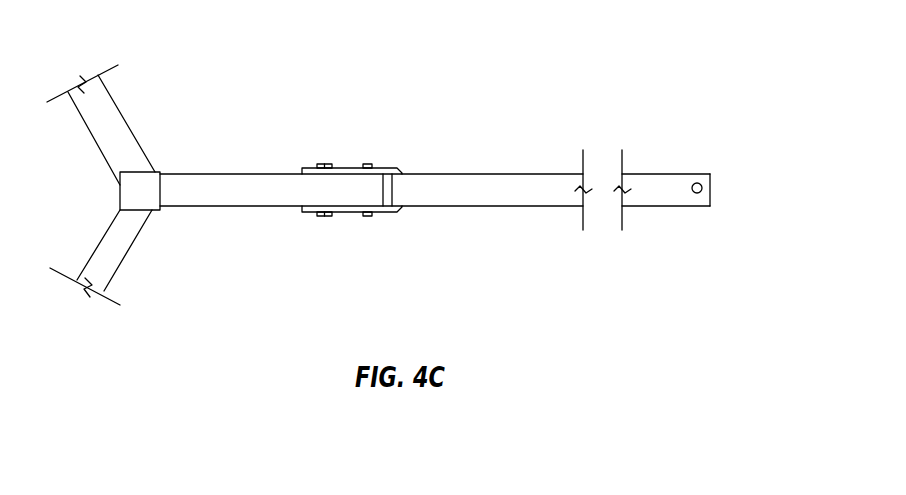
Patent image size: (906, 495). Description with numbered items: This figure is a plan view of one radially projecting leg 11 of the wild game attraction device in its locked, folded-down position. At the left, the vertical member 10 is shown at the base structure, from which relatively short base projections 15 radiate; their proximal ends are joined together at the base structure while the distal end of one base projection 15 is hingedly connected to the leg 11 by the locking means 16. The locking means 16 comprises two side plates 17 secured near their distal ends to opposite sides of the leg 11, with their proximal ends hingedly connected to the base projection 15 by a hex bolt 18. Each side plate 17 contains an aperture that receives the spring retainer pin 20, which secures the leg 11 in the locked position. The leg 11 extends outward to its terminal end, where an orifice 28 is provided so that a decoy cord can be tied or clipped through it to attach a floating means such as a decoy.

The vertical member 10 is at (118, 189).
The leg 11 is at (505, 173).
The base projection 15 is at (118, 107).
The locking means 16 is at (367, 180).
The side plate 17 is at (337, 168).
The hex bolt 18 is at (323, 167).
The spring retainer pin 20 is at (367, 167).
The orifice 28 is at (703, 187).